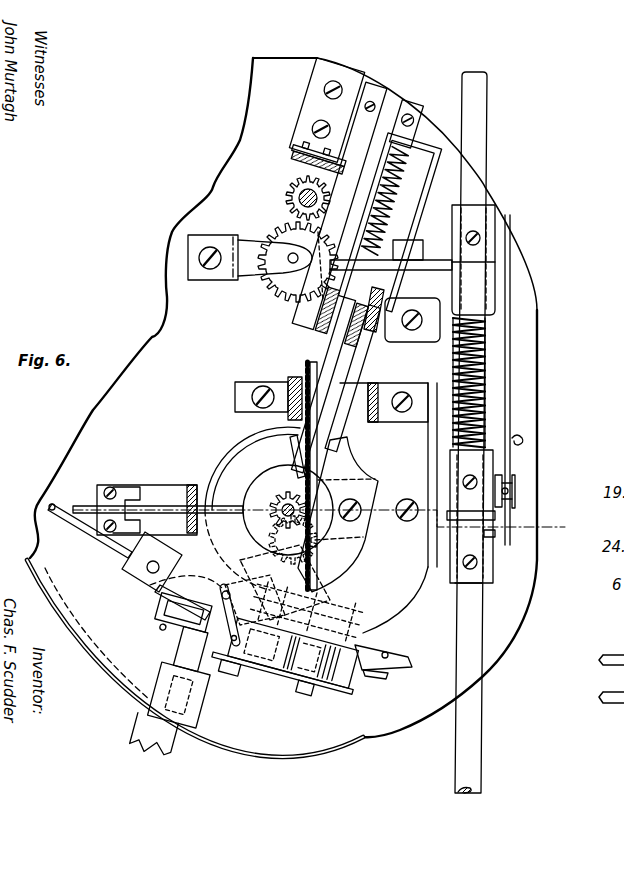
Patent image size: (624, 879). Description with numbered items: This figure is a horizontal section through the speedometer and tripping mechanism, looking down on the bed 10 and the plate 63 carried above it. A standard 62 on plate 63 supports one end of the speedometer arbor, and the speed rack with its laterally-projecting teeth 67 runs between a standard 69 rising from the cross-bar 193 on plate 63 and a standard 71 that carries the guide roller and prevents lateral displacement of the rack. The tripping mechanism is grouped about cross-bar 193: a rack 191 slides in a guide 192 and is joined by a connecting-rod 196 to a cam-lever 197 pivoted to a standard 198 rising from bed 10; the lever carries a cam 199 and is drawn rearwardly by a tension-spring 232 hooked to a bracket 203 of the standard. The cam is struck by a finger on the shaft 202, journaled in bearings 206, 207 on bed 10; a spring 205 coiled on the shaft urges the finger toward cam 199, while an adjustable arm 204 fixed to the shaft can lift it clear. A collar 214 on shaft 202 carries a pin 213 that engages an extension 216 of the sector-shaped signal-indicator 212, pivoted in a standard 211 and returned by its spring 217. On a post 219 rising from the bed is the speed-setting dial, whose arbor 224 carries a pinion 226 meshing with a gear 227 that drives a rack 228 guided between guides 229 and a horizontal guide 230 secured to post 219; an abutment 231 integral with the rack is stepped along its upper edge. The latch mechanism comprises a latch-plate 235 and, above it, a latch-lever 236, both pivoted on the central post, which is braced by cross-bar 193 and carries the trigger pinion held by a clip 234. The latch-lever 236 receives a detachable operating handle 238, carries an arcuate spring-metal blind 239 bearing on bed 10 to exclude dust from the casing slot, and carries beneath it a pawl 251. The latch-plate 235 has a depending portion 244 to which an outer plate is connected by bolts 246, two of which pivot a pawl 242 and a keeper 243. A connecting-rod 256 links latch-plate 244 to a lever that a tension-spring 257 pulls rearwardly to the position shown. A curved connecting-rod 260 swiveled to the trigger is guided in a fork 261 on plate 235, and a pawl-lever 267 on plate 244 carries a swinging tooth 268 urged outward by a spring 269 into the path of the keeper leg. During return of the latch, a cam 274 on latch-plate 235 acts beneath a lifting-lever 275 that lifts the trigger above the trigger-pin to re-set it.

The bed 10 is at (212, 185).
The standard 62 is at (412, 388).
The plate 63 is at (420, 434).
The laterally-projecting teeth 67 is at (302, 375).
The standard 69 is at (191, 485).
The standard 71 is at (285, 388).
The rack 191 is at (346, 443).
The guide 192 is at (354, 529).
The cross-bar 193 is at (130, 487).
The connecting-rod 196 is at (343, 364).
The cam-lever 197 is at (362, 320).
The standard 198 is at (405, 312).
The cam 199 is at (345, 233).
The shaft 202 is at (477, 126).
The bracket 203 is at (410, 150).
The adjustable arm 204 is at (410, 262).
The spring 205 is at (490, 364).
The bearing 206 is at (494, 208).
The bearing 207 is at (497, 517).
The standard 211 is at (516, 480).
The signal-indicator 212 is at (511, 299).
The pin 213 is at (494, 540).
The collar 214 is at (481, 585).
The extension 216 is at (496, 536).
The spring 217 is at (523, 437).
The post 219 is at (292, 157).
The arbor 224 is at (293, 197).
The pinion 226 is at (281, 219).
The gear 227 is at (260, 283).
The rack 228 is at (337, 289).
The guides 229 is at (385, 86).
The horizontal guide 230 is at (293, 160).
The abutment 231 is at (330, 233).
The tension-spring 232 is at (397, 187).
The clip 234 is at (178, 558).
The latch-plate 235 is at (364, 577).
The latch-lever 236 is at (220, 580).
The detachable operating handle 238 is at (158, 744).
The arcuate blind 239 is at (262, 754).
The pawl 242 is at (280, 680).
The keeper 243 is at (307, 700).
The depending portion of latch-plate 244 is at (135, 584).
The bolts 246 is at (232, 690).
The pawl 251 is at (165, 626).
The connecting-rod 256 is at (58, 506).
The tension-spring 257 is at (157, 673).
The curved connecting-rod 260 is at (232, 474).
The fork 261 is at (293, 442).
The pawl-lever 267 is at (372, 645).
The swinging tooth 268 is at (373, 668).
The spring 269 is at (364, 618).
The cam 274 is at (243, 451).
The lifting-lever 275 is at (157, 506).